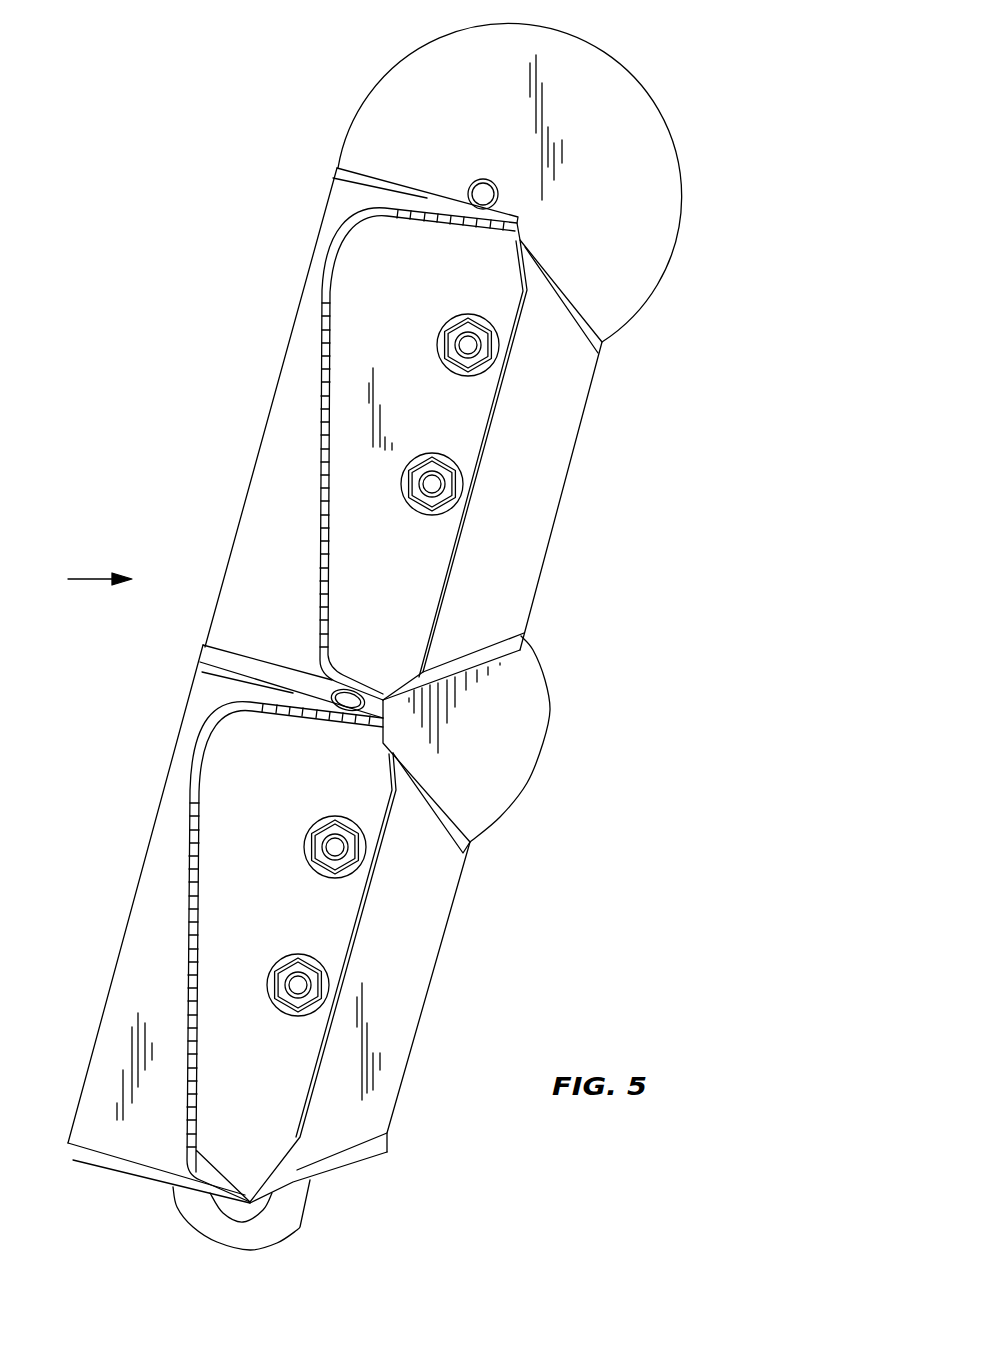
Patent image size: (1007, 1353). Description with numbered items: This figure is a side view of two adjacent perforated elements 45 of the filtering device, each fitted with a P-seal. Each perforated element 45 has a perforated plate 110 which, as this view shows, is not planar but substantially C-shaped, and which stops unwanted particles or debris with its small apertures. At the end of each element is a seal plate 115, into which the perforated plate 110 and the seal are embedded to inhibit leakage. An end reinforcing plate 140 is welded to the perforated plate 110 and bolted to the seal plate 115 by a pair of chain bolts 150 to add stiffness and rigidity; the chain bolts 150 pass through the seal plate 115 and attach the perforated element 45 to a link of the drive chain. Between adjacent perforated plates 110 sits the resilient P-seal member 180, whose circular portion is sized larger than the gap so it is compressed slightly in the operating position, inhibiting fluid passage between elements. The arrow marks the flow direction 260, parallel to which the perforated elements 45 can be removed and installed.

The perforated element 45 is at (250, 190).
The perforated plate 110 is at (320, 330).
The seal plate 115 is at (643, 232).
The end reinforcing plate 140 is at (430, 278).
The chain bolt 150 is at (470, 350).
The P-seal member 180 is at (483, 180).
The flow direction 260 is at (93, 578).